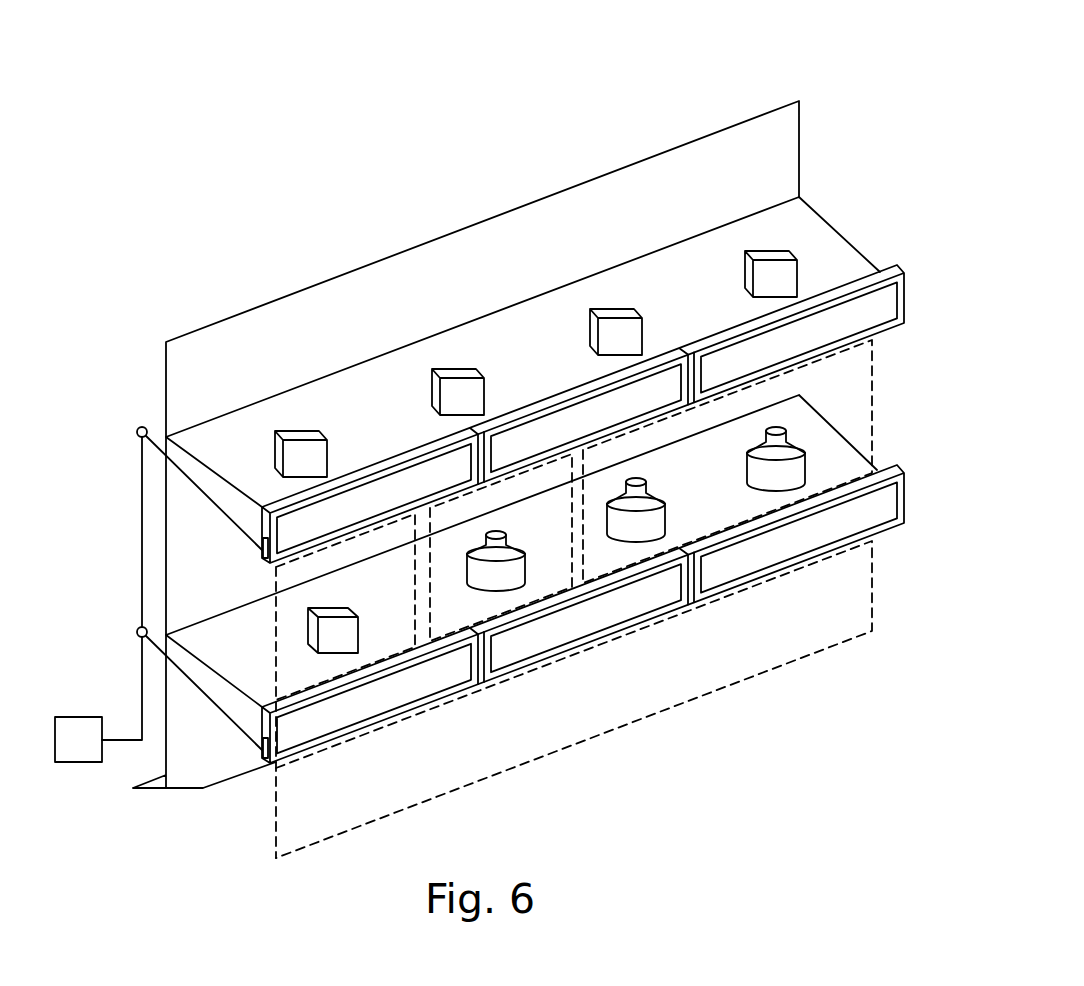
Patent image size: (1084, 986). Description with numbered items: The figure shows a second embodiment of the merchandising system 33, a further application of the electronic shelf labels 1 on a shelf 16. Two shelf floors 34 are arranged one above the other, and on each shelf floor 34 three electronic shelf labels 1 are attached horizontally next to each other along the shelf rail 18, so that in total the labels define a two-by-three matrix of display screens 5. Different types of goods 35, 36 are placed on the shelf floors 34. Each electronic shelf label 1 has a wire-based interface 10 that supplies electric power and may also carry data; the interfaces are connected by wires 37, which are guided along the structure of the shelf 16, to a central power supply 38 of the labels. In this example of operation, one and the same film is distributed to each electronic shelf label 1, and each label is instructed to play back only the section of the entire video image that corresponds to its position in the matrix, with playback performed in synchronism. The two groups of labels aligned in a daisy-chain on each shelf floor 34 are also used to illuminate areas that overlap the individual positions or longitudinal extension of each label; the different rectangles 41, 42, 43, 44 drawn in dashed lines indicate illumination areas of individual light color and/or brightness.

The electronic shelf label 1 is at (393, 458).
The display screen 5 is at (428, 476).
The wire-based interface 10 is at (262, 552).
The shelf 16 is at (164, 360).
The shelf rail 18 is at (907, 292).
The merchandising system 33 is at (809, 93).
The shelf floor 34 is at (230, 470).
The goods 35 is at (318, 433).
The goods 36 is at (355, 640).
The wires 37 is at (216, 507).
The central power supply 38 is at (78, 762).
The rectangle 41 is at (276, 580).
The rectangle 42 is at (462, 632).
The rectangle 43 is at (872, 395).
The rectangle 44 is at (872, 577).